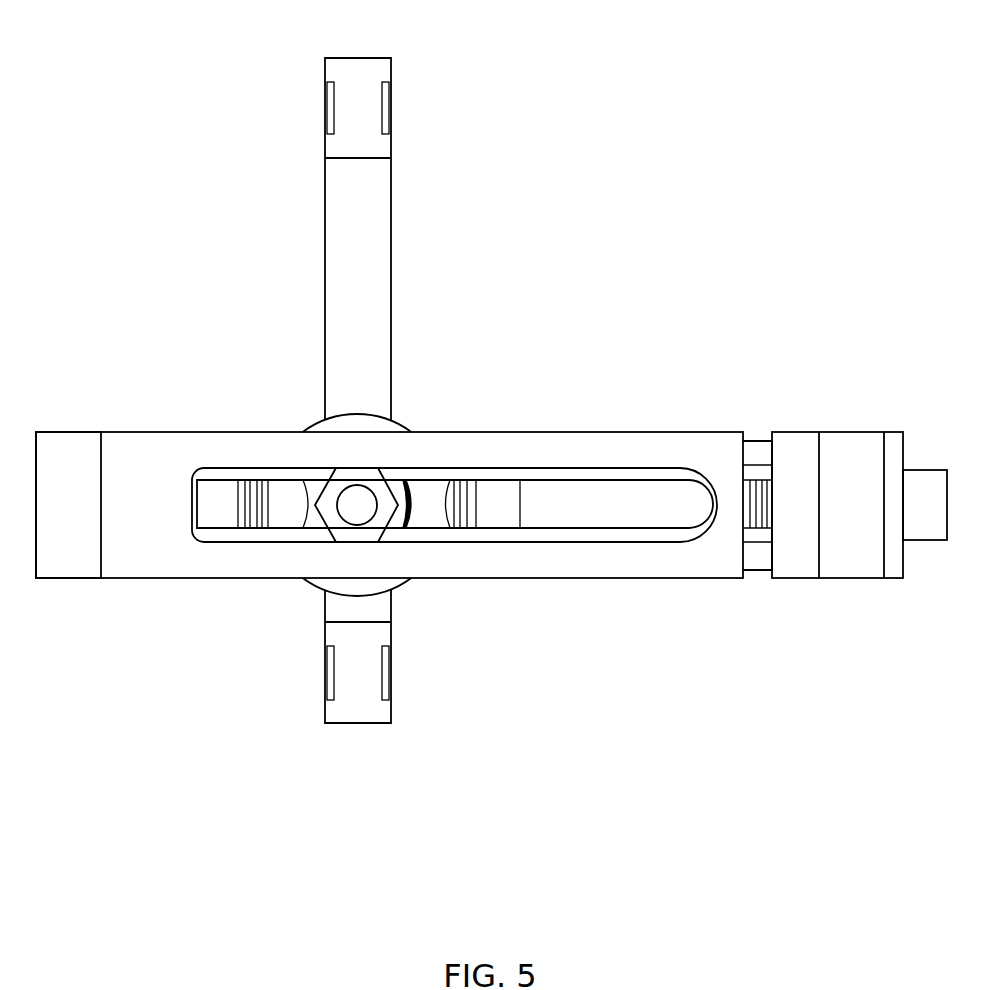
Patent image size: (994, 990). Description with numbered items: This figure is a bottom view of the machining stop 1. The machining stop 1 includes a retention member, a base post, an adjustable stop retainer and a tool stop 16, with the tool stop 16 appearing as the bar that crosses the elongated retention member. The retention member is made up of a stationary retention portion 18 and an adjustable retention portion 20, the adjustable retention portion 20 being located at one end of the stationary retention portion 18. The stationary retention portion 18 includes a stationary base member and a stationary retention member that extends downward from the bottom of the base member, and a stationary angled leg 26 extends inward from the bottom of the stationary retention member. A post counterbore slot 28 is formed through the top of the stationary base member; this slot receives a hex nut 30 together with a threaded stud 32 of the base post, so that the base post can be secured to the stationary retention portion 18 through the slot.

The machining stop 1 is at (665, 218).
The tool stop 16 is at (344, 76).
The stationary retention portion 18 is at (172, 422).
The adjustable retention portion 20 is at (841, 589).
The stationary angled leg 26 is at (72, 567).
The post counterbore slot 28 is at (264, 462).
The hex nut 30 is at (358, 475).
The threaded stud 32 is at (352, 512).